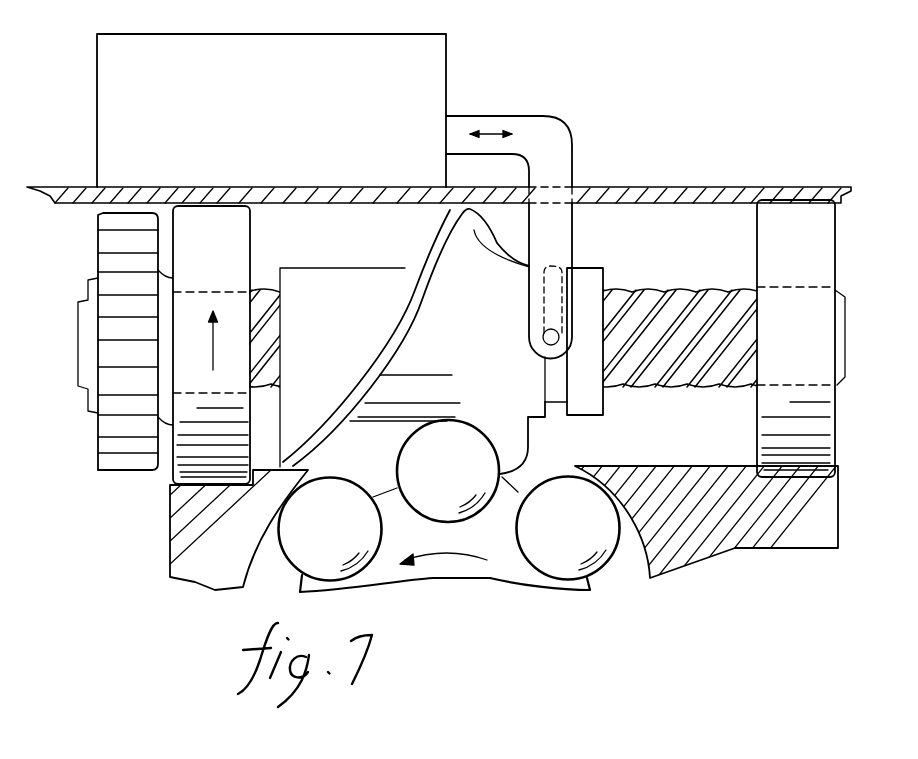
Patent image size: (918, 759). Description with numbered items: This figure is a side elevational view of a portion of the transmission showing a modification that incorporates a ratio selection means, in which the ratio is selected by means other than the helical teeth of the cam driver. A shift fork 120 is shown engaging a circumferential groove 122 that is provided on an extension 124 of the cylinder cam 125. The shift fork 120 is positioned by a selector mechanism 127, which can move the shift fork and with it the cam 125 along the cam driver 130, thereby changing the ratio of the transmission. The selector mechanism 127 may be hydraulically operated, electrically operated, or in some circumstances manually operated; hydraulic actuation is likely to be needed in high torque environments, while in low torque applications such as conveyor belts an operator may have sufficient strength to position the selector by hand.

The selector mechanism 127 is at (262, 130).
The shift fork 120 is at (546, 252).
The cam driver 130 is at (683, 289).
The cylinder cam 125 is at (290, 266).
The extension 124 is at (606, 410).
The circumferential groove 122 is at (553, 418).